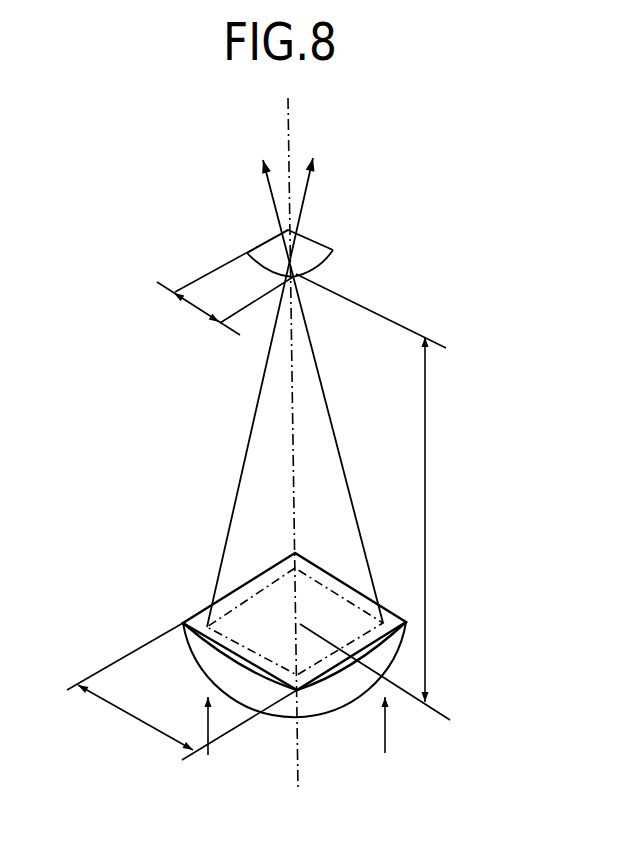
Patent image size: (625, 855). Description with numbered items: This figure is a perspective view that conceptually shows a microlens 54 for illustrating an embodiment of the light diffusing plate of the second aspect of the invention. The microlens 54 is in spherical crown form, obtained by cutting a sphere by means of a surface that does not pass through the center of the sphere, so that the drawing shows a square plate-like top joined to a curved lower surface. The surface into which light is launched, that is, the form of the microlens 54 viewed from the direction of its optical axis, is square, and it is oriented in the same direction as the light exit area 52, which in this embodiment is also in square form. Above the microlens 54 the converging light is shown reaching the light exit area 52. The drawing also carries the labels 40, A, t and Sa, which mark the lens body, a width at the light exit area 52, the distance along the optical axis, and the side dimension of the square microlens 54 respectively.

The objective lens 40 is at (210, 532).
The light exit area 52 is at (317, 288).
The microlens 54 is at (320, 717).
The spot diameter dimension A is at (190, 306).
The lens thickness dimension t is at (426, 539).
The lens side length dimension Sa is at (138, 718).